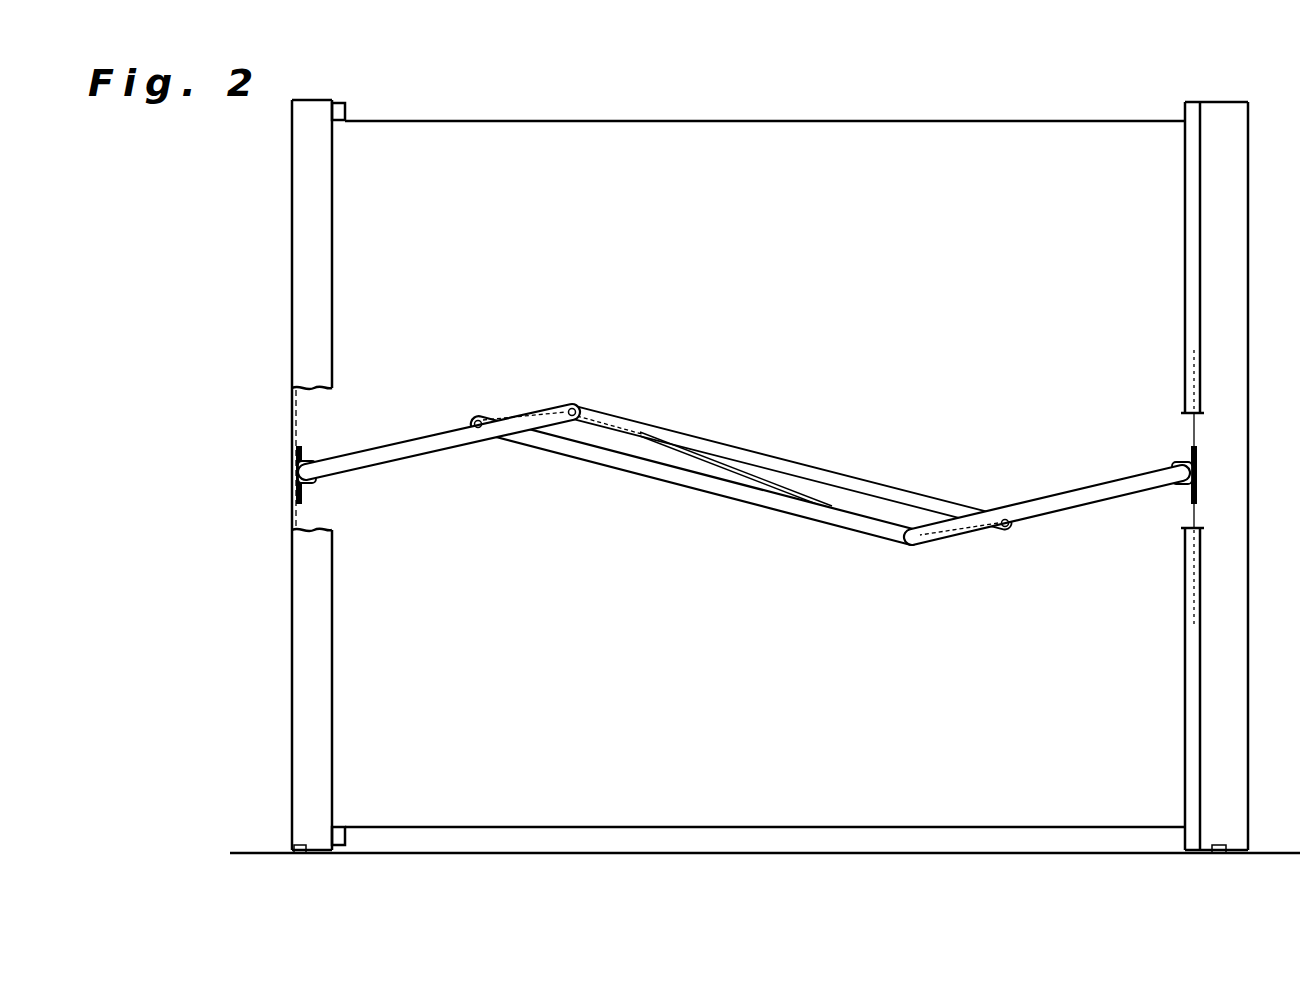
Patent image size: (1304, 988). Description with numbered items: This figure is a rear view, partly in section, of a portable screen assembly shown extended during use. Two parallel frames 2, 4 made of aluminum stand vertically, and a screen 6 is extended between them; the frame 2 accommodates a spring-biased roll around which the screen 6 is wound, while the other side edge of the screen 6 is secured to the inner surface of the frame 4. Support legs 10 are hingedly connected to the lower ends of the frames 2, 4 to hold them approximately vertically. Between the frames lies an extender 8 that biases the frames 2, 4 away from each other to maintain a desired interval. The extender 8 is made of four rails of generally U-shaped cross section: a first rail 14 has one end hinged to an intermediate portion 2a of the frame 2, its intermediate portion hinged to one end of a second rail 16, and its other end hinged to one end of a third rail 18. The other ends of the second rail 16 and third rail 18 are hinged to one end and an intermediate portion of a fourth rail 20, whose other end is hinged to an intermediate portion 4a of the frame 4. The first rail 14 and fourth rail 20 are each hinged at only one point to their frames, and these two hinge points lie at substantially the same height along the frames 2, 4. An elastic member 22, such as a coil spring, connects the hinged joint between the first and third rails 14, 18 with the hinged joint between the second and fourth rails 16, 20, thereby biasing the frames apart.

The frame 2 is at (1236, 324).
The intermediate portion of the frame 2a is at (1196, 480).
The frame 4 is at (306, 292).
The intermediate portion of the frame 4a is at (298, 475).
The screen 6 is at (755, 131).
The extender 8 is at (862, 456).
The support legs 10 is at (296, 846).
The first rail 14 is at (1086, 506).
The second rail 16 is at (786, 462).
The third rail 18 is at (628, 463).
The fourth rail 20 is at (428, 444).
The elastic member 22 is at (734, 472).